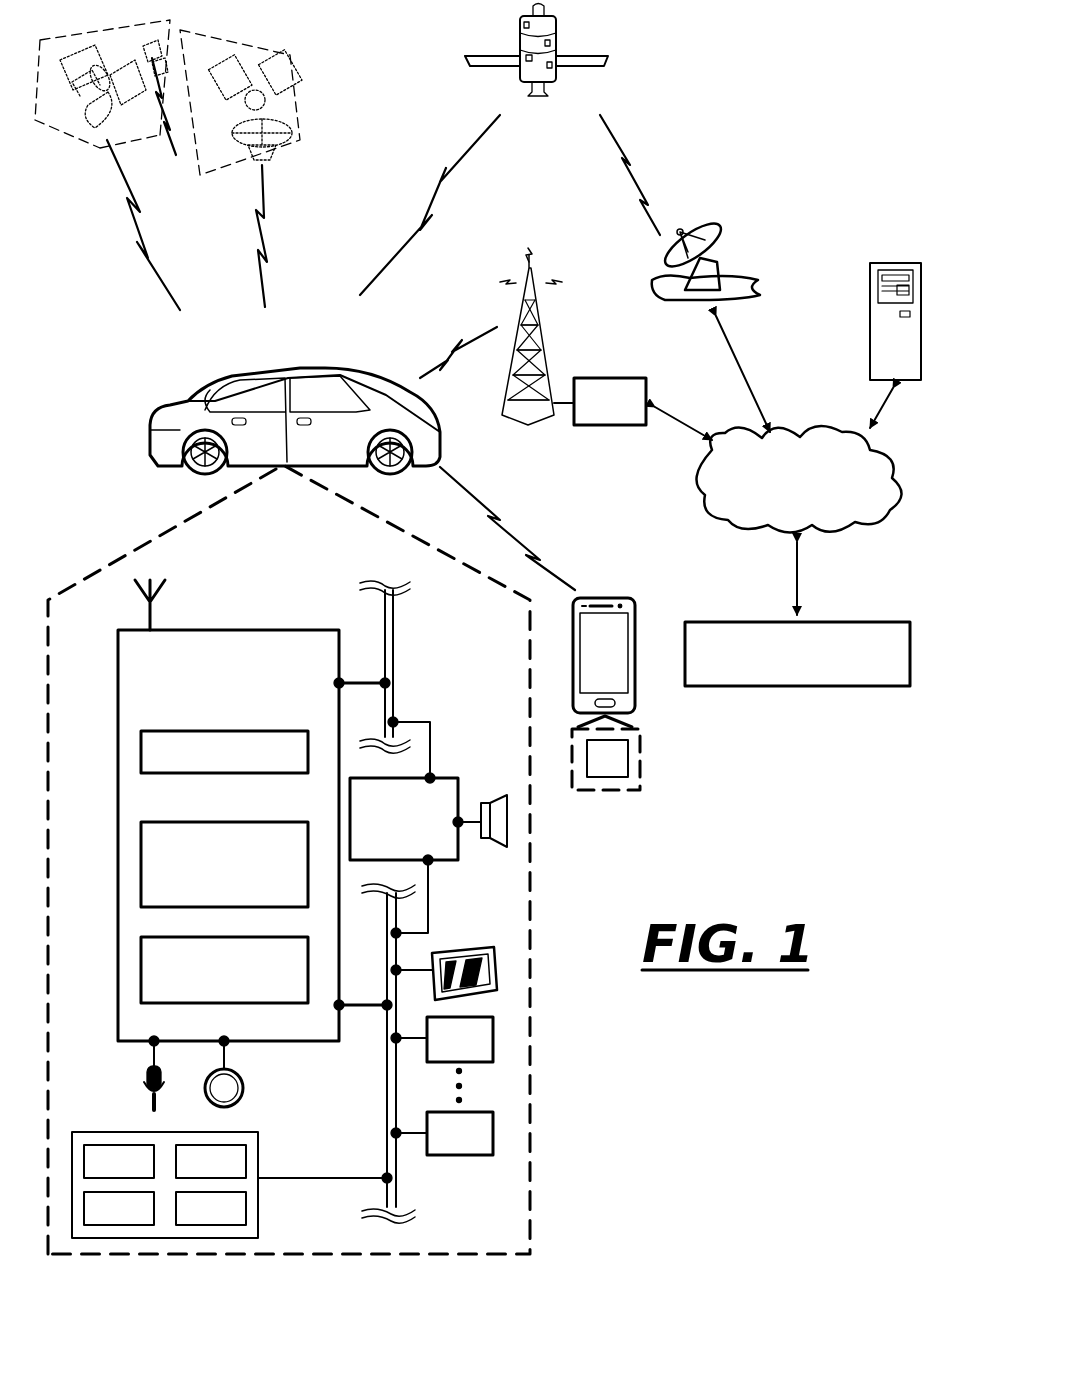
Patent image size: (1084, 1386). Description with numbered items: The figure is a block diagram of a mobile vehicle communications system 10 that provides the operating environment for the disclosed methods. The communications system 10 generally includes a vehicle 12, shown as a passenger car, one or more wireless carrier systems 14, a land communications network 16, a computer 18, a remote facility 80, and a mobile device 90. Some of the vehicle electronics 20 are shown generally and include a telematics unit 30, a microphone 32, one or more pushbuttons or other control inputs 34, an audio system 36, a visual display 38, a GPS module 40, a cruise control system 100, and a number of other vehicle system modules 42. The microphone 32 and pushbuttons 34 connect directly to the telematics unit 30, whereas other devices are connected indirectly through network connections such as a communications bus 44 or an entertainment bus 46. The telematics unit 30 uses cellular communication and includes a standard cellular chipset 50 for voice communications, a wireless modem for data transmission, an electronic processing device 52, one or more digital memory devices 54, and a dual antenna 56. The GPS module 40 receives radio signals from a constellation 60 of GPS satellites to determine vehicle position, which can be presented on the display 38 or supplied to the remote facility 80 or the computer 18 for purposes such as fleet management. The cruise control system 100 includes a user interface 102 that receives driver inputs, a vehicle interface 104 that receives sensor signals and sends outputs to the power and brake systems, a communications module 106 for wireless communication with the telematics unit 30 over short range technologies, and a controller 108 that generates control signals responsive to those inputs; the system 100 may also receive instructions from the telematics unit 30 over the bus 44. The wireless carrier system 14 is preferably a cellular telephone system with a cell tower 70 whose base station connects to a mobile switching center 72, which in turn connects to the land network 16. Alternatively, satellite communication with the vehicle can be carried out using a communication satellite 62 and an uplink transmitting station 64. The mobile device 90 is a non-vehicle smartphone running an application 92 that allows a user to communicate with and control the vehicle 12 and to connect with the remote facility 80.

The mobile vehicle communications system 10 is at (824, 52).
The vehicle 12 is at (150, 433).
The wireless carrier system 14 is at (512, 432).
The land communications network 16 is at (900, 480).
The computer 18 is at (923, 336).
The vehicle electronics 20 is at (283, 1257).
The telematics unit 30 is at (289, 630).
The microphone 32 is at (145, 1085).
The pushbuttons or other control inputs 34 is at (245, 1084).
The audio system 36 is at (445, 778).
The visual display 38 is at (456, 953).
The GPS module 40 is at (493, 1044).
The vehicle system modules 42 is at (445, 1155).
The communications bus 44 is at (385, 1053).
The entertainment bus 46 is at (395, 657).
The cellular chipset 50 is at (224, 752).
The electronic processing device 52 is at (224, 864).
The digital memory devices 54 is at (224, 970).
The dual antenna 56 is at (148, 612).
The constellation of GPS satellites 60 is at (330, 124).
The communication satellite 62 is at (558, 30).
The uplink transmitting station 64 is at (735, 274).
The cell tower 70 is at (540, 340).
The mobile switching center 72 is at (608, 378).
The remote facility 80 is at (868, 622).
The mobile device 90 is at (605, 598).
The application 92 is at (616, 793).
The cruise control system 100 is at (208, 1188).
The user interface 102 is at (119, 1161).
The vehicle interface 104 is at (211, 1161).
The communications module 106 is at (119, 1208).
The controller 108 is at (258, 1212).